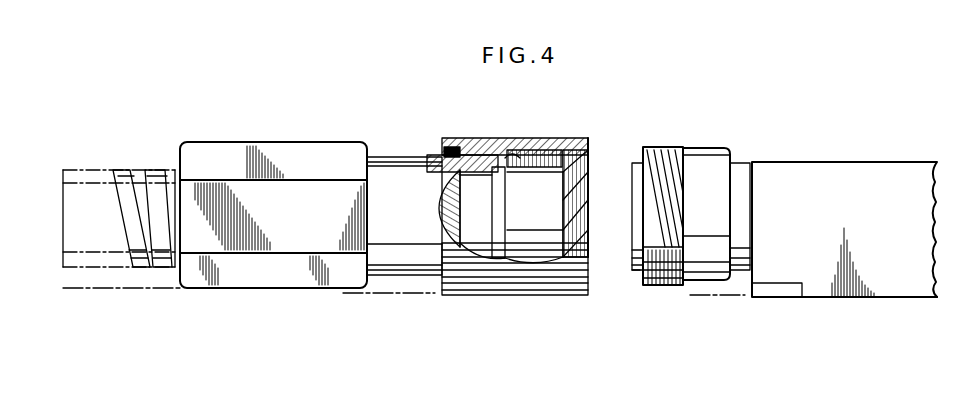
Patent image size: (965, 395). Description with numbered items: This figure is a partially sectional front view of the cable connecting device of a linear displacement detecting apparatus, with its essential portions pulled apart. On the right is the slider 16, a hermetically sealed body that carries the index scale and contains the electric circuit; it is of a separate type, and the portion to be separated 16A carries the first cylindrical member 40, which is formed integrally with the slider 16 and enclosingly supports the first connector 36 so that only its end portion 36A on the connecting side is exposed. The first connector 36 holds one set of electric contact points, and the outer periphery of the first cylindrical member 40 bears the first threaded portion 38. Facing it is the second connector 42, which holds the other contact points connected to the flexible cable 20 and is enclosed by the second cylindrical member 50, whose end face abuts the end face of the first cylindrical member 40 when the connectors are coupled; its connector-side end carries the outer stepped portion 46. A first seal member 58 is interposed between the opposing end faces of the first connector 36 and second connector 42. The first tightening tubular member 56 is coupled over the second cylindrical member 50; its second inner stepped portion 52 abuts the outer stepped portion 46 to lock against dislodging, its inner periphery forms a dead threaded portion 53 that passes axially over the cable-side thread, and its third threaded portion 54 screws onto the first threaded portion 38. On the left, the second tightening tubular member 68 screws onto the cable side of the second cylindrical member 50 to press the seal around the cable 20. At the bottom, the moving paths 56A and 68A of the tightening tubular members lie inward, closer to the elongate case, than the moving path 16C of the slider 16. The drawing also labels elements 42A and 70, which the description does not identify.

The slider 16 is at (828, 298).
The portion to be separated 16A is at (893, 285).
The moving path of the slider 16C is at (695, 297).
The flexible cable 20 is at (75, 178).
The first connector 36 is at (637, 165).
The end portion on the connecting side 36A is at (635, 262).
The first threaded portion 38 is at (668, 160).
The first cylindrical member 40 is at (710, 165).
The second connector 42 is at (548, 255).
The socket inner wall 42A is at (563, 215).
The outer stepped portion 46 is at (498, 168).
The second cylindrical member 50 is at (383, 165).
The second inner stepped portion 52 is at (475, 152).
The dead threaded portion 53 is at (446, 151).
The third threaded portion 54 is at (585, 180).
The first tightening tubular member 56 is at (510, 280).
The moving path of the first tightening tubular member 56A is at (372, 295).
The first seal member 58 is at (548, 150).
The second tightening tubular member 68 is at (276, 152).
The moving path of the second tightening tubular member 68A is at (83, 290).
The threads 70 is at (157, 178).